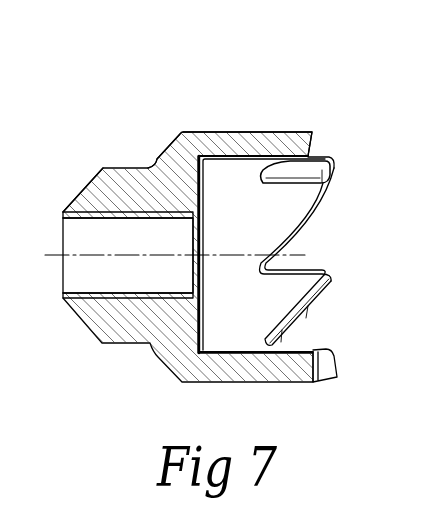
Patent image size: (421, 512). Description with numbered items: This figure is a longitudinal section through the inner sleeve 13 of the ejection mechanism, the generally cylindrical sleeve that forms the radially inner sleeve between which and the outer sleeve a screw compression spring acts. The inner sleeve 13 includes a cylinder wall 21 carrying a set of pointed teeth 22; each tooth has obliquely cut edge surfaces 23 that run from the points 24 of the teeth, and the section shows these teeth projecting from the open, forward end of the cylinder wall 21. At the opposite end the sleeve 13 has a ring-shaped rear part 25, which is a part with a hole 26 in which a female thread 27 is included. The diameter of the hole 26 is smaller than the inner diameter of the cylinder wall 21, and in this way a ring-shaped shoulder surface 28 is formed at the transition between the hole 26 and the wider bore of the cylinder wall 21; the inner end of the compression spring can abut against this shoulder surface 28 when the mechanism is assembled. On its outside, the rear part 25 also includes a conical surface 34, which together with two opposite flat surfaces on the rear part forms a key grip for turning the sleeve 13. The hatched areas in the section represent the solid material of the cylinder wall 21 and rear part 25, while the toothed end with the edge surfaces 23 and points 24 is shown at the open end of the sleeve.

The inner sleeve 13 is at (202, 110).
The cylinder wall 21 is at (253, 131).
The pointed teeth 22 is at (338, 153).
The obliquely cut edge surfaces 23 is at (321, 298).
The points of the teeth 24 is at (334, 172).
The ring-shaped rear part 25 is at (135, 168).
The hole 26 is at (90, 273).
The female thread 27 is at (101, 220).
The ring-shaped shoulder surface 28 is at (201, 182).
The conical surface 34 is at (88, 185).